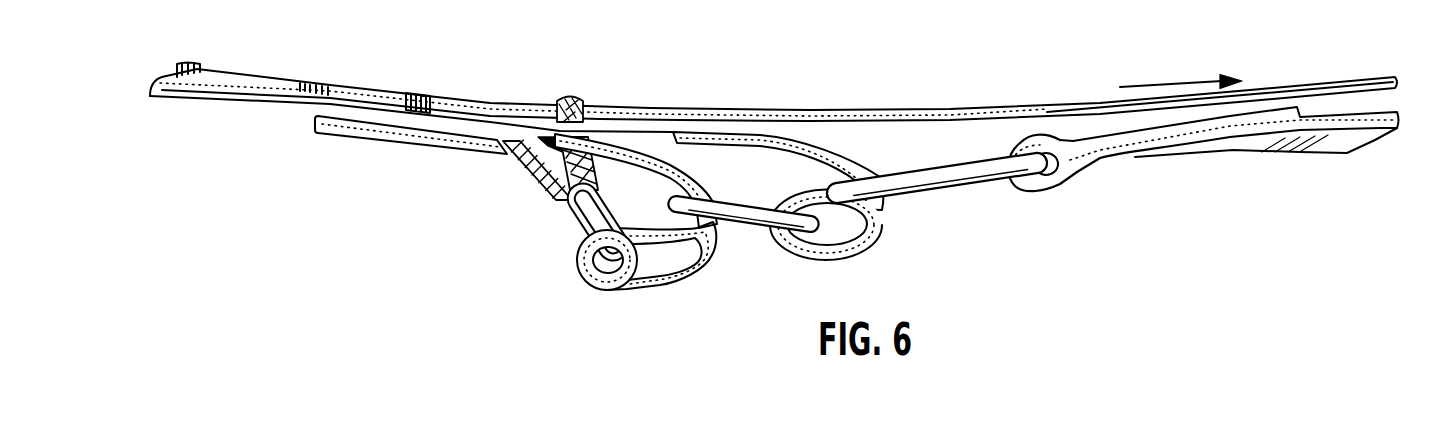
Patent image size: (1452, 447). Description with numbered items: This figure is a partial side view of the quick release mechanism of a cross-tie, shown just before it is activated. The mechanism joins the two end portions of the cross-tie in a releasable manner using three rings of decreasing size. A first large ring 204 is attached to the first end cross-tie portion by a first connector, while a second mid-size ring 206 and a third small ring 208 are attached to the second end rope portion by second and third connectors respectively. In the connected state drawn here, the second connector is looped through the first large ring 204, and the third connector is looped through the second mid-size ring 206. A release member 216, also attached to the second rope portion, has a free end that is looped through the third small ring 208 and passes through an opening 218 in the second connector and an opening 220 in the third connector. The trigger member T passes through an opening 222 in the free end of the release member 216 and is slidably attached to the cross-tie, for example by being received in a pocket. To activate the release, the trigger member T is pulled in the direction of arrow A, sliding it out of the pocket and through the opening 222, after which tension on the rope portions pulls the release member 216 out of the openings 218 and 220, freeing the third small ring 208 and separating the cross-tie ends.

The first large ring 204 is at (995, 182).
The second mid-size ring 206 is at (742, 226).
The third small ring 208 is at (628, 290).
The release member 216 is at (560, 207).
The opening in the second connector 218 is at (590, 122).
The opening in the third connector 220 is at (528, 166).
The opening in the free end of the release member 222 is at (557, 101).
The trigger member T is at (947, 115).
The arrow A is at (1157, 86).